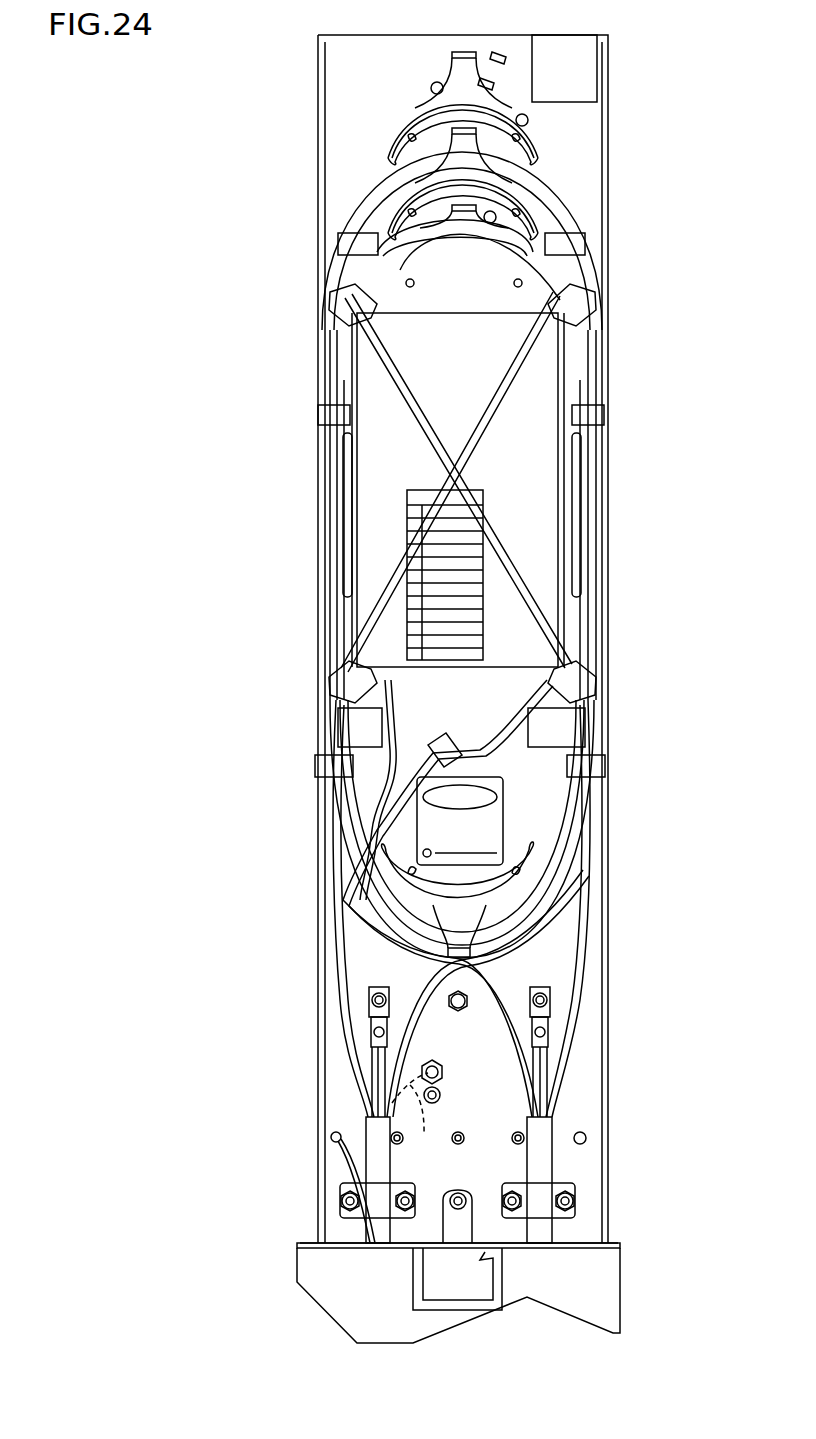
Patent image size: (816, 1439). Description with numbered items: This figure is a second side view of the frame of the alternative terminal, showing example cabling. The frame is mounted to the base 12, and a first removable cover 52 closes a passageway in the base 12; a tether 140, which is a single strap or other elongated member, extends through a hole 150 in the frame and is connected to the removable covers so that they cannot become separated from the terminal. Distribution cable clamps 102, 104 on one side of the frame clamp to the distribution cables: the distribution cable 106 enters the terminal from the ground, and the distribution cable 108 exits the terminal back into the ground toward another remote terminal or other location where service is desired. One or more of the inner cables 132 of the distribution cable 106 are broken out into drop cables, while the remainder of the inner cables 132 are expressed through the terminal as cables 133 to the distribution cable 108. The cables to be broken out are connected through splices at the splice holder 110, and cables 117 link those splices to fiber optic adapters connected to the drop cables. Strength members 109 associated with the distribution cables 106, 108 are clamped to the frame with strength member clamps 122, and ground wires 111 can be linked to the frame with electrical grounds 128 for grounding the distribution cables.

The base 12 is at (620, 1297).
The first removable cover 52 is at (585, 1243).
The distribution cable clamp 102 is at (343, 1190).
The distribution cable clamp 104 is at (575, 1183).
The distribution cable 106 is at (350, 1110).
The distribution cable 108 is at (570, 1124).
The strength member 109 is at (390, 1063).
The splice holder 110 is at (535, 490).
The ground wire 111 is at (420, 1120).
The cable 117 is at (518, 266).
The strength member clamp 122 is at (388, 1017).
The electrical ground 128 is at (443, 1080).
The inner cable 132 is at (335, 990).
The cable 133 is at (560, 1070).
The tether 140 is at (322, 1142).
The hole 150 is at (335, 1132).